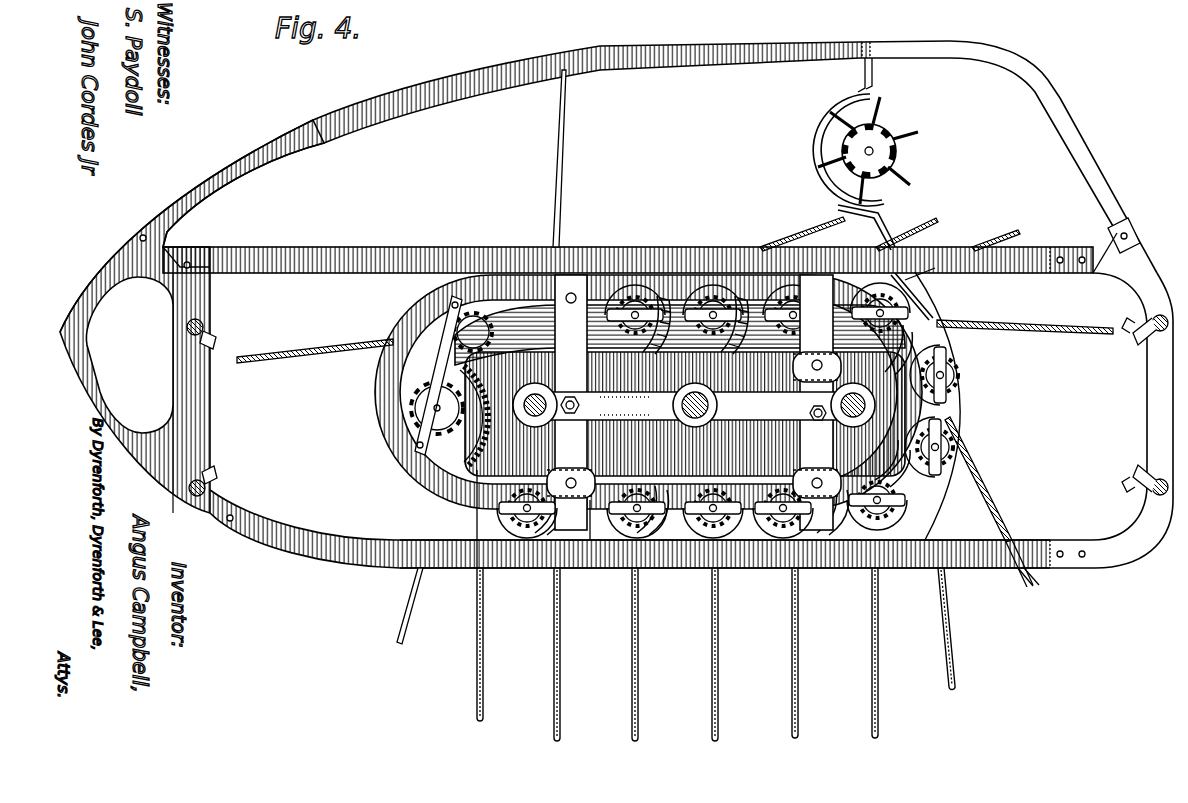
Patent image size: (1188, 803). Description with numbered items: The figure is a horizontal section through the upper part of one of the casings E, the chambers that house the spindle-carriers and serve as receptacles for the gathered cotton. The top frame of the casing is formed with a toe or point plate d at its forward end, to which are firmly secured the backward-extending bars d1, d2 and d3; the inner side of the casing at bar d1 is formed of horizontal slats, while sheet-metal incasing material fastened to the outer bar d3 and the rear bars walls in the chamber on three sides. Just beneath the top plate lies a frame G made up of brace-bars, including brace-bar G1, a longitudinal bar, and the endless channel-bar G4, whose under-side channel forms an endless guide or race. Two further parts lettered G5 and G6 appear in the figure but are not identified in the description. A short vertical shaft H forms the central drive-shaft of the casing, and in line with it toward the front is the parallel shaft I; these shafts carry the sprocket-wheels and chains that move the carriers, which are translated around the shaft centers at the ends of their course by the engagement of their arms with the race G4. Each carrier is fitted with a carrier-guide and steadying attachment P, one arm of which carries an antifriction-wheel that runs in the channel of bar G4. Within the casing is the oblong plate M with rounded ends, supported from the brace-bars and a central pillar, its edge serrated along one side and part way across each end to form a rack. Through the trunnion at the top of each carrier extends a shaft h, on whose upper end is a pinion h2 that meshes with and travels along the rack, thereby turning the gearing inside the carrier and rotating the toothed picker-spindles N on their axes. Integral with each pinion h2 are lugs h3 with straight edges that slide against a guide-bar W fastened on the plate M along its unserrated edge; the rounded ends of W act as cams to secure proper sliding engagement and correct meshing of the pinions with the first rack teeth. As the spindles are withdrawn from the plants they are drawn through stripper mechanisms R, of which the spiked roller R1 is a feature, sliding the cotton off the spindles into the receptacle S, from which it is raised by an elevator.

The backward-extending bar d3 is at (588, 56).
The backward-extending bar d2 is at (333, 247).
The backward-extending bar d1 is at (362, 542).
The toe or point plate d is at (170, 345).
The casing E is at (474, 158).
The receptacle S is at (1054, 206).
The spiked roller R1 is at (892, 152).
The stripper mechanism R is at (893, 212).
The pinion h2 is at (638, 300).
The lug h3 is at (664, 300).
The shaft h is at (817, 402).
The guide-bar W is at (680, 335).
The shaft I is at (540, 396).
The central drive-shaft H is at (690, 406).
The endless channel-bar G4 is at (392, 446).
The frame G is at (685, 414).
The brace-bar G1 is at (490, 381).
The central hub G5 is at (717, 405).
The post boss G6 is at (816, 443).
The carrier-guide and steadying attachment P is at (512, 515).
The oblong plate M is at (602, 568).
The picker-spindle N is at (552, 630).